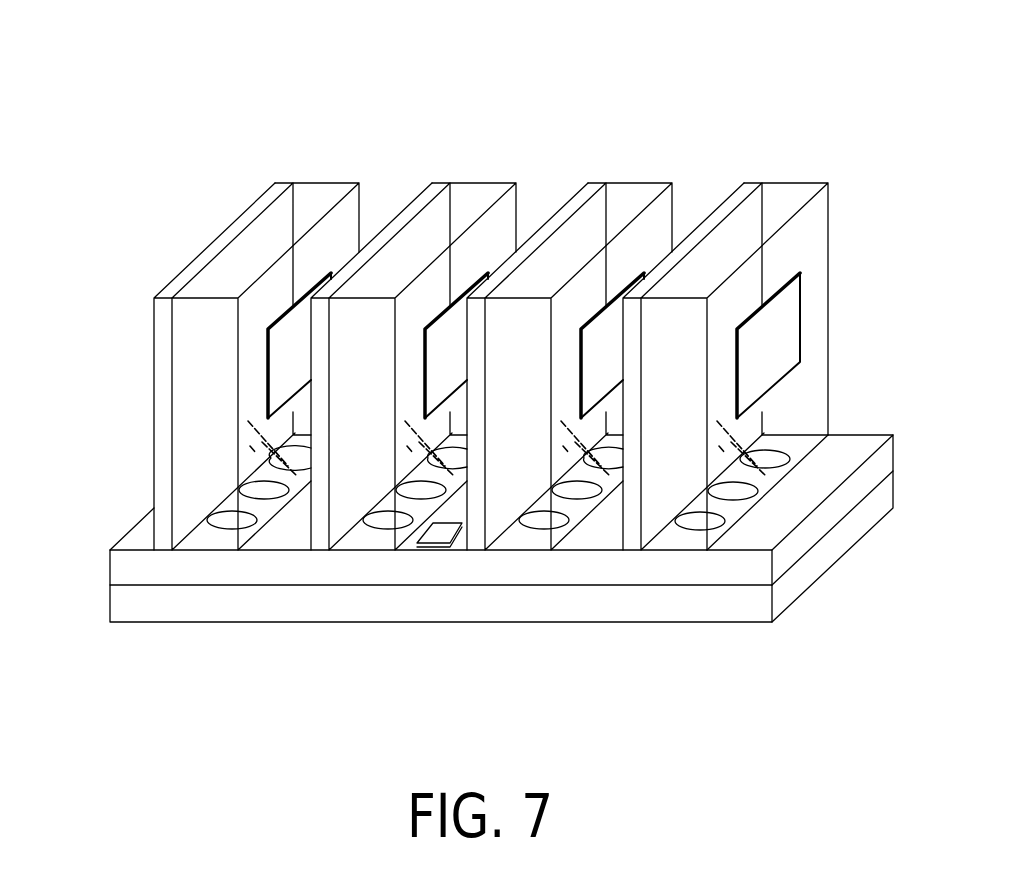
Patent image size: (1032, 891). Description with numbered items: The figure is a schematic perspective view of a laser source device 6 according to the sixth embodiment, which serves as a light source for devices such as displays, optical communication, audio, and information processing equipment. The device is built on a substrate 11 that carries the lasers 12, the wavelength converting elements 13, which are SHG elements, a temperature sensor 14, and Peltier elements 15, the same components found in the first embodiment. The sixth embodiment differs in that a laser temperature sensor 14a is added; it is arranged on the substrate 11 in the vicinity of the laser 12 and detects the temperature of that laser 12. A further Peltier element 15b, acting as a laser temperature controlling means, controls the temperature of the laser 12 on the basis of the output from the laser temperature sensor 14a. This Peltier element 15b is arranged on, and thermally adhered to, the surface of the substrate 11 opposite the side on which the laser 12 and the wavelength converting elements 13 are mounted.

The laser source device 6 is at (543, 140).
The substrate 11 is at (788, 553).
The laser 12 is at (207, 524).
The wavelength converting element 13 is at (244, 262).
The temperature sensor 14 is at (287, 333).
The laser temperature sensor 14a is at (418, 549).
The Peltier element 15 is at (157, 410).
The Peltier element (laser temperature controlling means) 15b is at (593, 612).